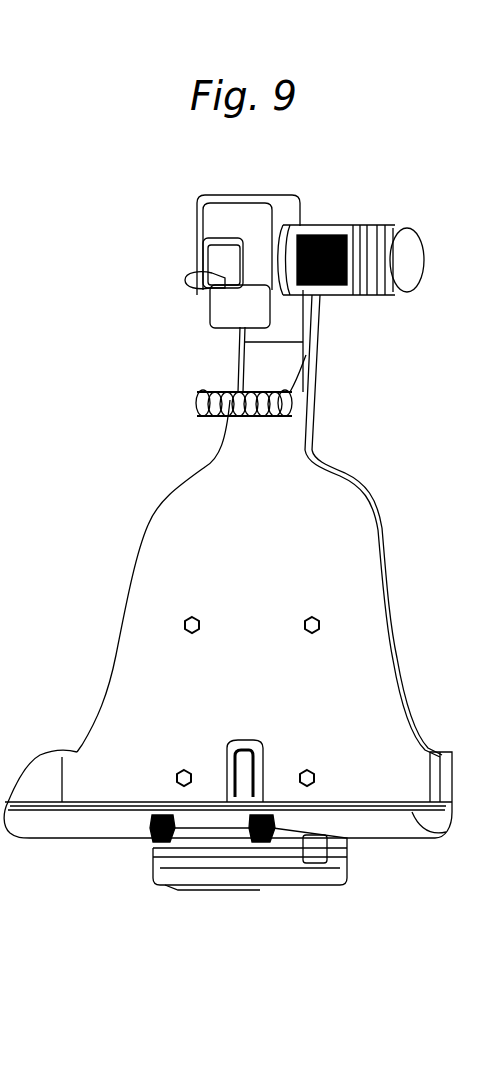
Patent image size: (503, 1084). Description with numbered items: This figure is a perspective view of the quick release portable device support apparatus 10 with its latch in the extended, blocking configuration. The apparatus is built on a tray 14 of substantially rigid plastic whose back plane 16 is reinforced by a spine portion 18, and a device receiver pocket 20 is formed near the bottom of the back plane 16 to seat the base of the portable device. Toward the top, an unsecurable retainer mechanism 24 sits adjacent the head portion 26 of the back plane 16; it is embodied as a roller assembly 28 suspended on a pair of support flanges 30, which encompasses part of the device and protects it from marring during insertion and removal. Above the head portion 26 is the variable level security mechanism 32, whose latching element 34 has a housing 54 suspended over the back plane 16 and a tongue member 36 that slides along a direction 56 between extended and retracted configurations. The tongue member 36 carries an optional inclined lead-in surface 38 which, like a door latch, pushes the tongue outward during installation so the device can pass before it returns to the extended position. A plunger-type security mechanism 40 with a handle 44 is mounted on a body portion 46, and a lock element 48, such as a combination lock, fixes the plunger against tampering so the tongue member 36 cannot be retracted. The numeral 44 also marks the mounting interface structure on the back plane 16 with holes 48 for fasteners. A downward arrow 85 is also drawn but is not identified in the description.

The quick release portable device support apparatus 10 is at (387, 143).
The tray 14 is at (85, 826).
The back plane 16 is at (392, 652).
The spine portion 18 is at (352, 843).
The device receiver pocket 20 is at (103, 802).
The unsecurable retainer mechanism 24 is at (190, 428).
The head portion 26 is at (284, 377).
The roller assembly 28 is at (228, 430).
The support flanges 30 is at (200, 396).
The variable level security mechanism 32 is at (356, 323).
The latching element 34 is at (205, 284).
The tongue member 36 is at (218, 313).
The lead-in surface 38 is at (218, 312).
The plunger-type security mechanism 40 is at (372, 232).
The handle 44 is at (305, 770).
The body portion 46 is at (362, 226).
The lock element 48 is at (328, 230).
The housing 54 is at (240, 196).
The direction 56 is at (124, 252).
The downward direction 85 is at (222, 312).